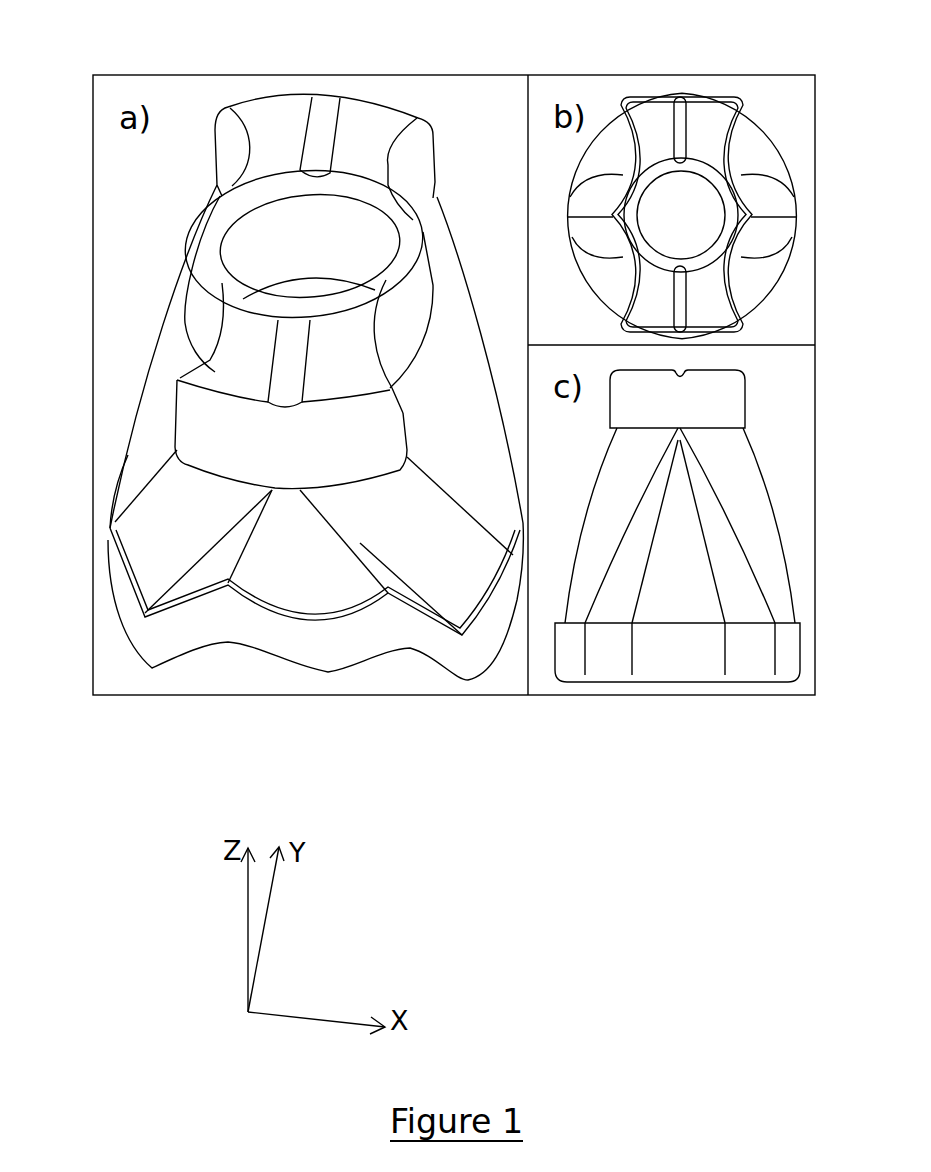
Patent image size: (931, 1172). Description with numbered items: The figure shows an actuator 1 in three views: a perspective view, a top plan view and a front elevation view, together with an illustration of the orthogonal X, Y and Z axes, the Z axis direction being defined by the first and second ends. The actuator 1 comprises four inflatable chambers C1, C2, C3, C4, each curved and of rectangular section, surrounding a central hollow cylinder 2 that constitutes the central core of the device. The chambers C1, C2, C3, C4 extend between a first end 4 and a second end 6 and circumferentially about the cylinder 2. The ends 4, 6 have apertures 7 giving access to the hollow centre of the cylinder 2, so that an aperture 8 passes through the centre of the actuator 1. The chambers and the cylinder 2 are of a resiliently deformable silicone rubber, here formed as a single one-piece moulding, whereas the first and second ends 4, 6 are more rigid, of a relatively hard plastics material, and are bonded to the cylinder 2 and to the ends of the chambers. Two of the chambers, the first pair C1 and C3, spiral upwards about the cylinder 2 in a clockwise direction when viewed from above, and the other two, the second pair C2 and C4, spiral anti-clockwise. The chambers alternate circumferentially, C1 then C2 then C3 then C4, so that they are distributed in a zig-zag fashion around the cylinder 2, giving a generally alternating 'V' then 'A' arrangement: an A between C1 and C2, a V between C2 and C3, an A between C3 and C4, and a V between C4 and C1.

The actuator 1 is at (172, 205).
The central hollow cylinder 2 is at (272, 567).
The first end 4 is at (308, 640).
The second end 6 is at (283, 130).
The aperture 7 is at (318, 210).
The aperture through the centre of the actuator 8 is at (347, 248).
The inflatable chamber C1 is at (157, 325).
The inflatable chamber C2 is at (470, 296).
The inflatable chamber C3 is at (437, 587).
The inflatable chamber C4 is at (150, 470).